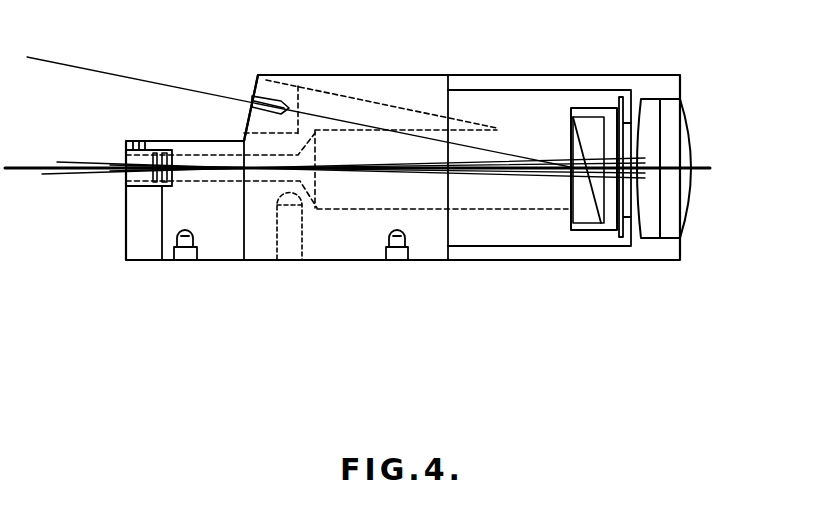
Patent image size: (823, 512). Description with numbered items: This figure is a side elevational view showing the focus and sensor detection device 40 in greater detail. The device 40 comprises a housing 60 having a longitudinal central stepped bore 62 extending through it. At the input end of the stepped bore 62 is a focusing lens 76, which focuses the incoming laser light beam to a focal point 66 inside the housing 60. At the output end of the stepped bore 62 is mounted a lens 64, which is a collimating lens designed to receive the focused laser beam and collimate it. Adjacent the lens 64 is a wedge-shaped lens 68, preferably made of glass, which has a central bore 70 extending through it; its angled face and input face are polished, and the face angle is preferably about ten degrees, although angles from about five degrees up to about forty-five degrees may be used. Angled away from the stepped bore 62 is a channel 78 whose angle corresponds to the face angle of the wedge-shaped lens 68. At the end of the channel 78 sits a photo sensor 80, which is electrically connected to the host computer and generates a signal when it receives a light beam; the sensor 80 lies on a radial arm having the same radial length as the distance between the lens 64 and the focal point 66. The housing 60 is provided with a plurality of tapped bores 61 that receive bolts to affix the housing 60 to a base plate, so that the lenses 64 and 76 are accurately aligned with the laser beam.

The focus and sensor detection device 40 is at (300, 75).
The housing 60 is at (338, 261).
The tapped bores 61 is at (186, 262).
The stepped bore 62 is at (517, 212).
The lens 64 is at (697, 122).
The focal point 66 is at (244, 168).
The wedge-shaped lens 68 is at (595, 122).
The central bore 70 is at (603, 222).
The focusing lens 76 is at (162, 190).
The channel 78 is at (402, 110).
The photo sensor 80 is at (262, 98).